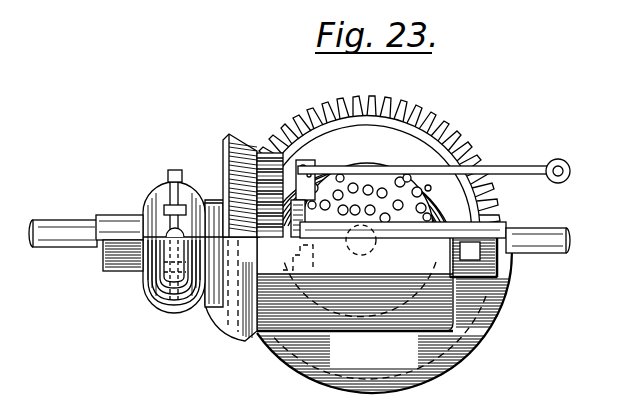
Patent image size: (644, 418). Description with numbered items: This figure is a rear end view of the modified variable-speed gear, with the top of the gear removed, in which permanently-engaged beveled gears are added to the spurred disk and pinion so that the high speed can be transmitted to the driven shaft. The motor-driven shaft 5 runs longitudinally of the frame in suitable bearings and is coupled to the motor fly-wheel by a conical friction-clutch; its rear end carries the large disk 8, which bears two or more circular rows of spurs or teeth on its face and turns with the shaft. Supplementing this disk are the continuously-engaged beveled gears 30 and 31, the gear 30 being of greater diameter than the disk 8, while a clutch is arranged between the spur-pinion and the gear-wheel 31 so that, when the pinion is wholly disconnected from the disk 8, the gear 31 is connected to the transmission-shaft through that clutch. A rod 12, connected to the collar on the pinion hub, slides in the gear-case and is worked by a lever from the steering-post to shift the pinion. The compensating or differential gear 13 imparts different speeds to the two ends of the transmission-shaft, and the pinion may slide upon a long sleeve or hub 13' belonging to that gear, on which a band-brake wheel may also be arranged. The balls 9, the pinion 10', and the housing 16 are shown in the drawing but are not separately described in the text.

The motor-driven shaft 5 is at (568, 239).
The disk 8 is at (440, 147).
The balls 9 is at (367, 229).
The pinion 10' is at (269, 169).
The rod 12 is at (512, 173).
The compensating gear 13 is at (196, 255).
The sleeve or hub 13' is at (403, 241).
The housing 16 is at (374, 315).
The beveled gear 30 is at (384, 88).
The beveled gear-wheel 31 is at (232, 141).